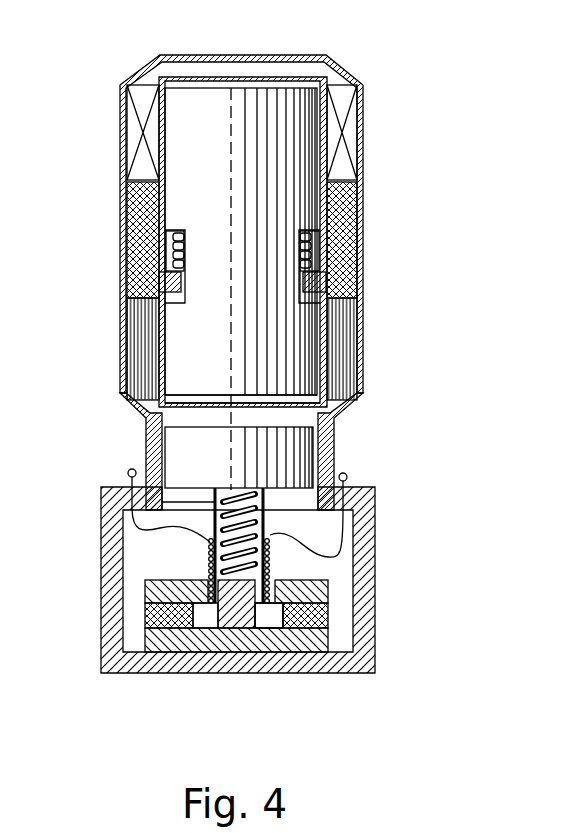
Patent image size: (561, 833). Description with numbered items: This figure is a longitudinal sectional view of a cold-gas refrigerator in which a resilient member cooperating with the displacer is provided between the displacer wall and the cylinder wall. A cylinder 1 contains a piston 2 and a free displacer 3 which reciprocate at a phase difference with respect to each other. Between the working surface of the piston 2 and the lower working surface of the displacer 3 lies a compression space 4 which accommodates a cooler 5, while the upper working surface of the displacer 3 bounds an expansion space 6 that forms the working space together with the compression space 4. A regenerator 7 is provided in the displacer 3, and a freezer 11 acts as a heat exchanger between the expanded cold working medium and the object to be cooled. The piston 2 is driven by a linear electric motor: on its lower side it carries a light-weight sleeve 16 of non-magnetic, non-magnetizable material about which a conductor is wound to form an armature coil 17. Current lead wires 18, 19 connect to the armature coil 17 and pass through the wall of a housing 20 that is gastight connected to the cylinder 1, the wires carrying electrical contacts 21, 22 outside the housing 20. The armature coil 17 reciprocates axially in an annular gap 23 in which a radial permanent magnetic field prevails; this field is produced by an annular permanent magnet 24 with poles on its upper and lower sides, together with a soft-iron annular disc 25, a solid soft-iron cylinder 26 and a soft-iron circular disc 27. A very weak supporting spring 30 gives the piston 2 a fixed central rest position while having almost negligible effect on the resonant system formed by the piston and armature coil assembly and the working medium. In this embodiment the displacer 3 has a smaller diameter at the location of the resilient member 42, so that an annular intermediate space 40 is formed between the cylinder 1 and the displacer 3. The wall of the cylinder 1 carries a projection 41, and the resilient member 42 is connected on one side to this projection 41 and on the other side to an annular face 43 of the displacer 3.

The cylinder 1 is at (158, 372).
The piston 2 is at (286, 460).
The free displacer 3 is at (252, 344).
The compression space 4 is at (253, 420).
The cooler 5 is at (145, 337).
The expansion space 6 is at (282, 70).
The regenerator 7 is at (145, 245).
The freezer 11 is at (145, 132).
The sleeve 16 is at (266, 500).
The armature coil 17 is at (271, 569).
The current lead wire 18 is at (149, 540).
The current lead wire 19 is at (341, 551).
The housing 20 is at (112, 544).
The electrical contact 21 is at (128, 471).
The electrical contact 22 is at (347, 476).
The annular gap 23 is at (268, 627).
The annular permanent magnet 24 is at (332, 618).
The soft-iron annular disc 25 is at (312, 595).
The solid soft-iron cylinder 26 is at (242, 612).
The soft-iron circular disc 27 is at (200, 640).
The supporting spring 30 is at (162, 502).
The annular intermediate space 40 is at (310, 261).
The projection 41 is at (310, 287).
The resilient member 42 is at (322, 248).
The annular face 43 is at (303, 232).